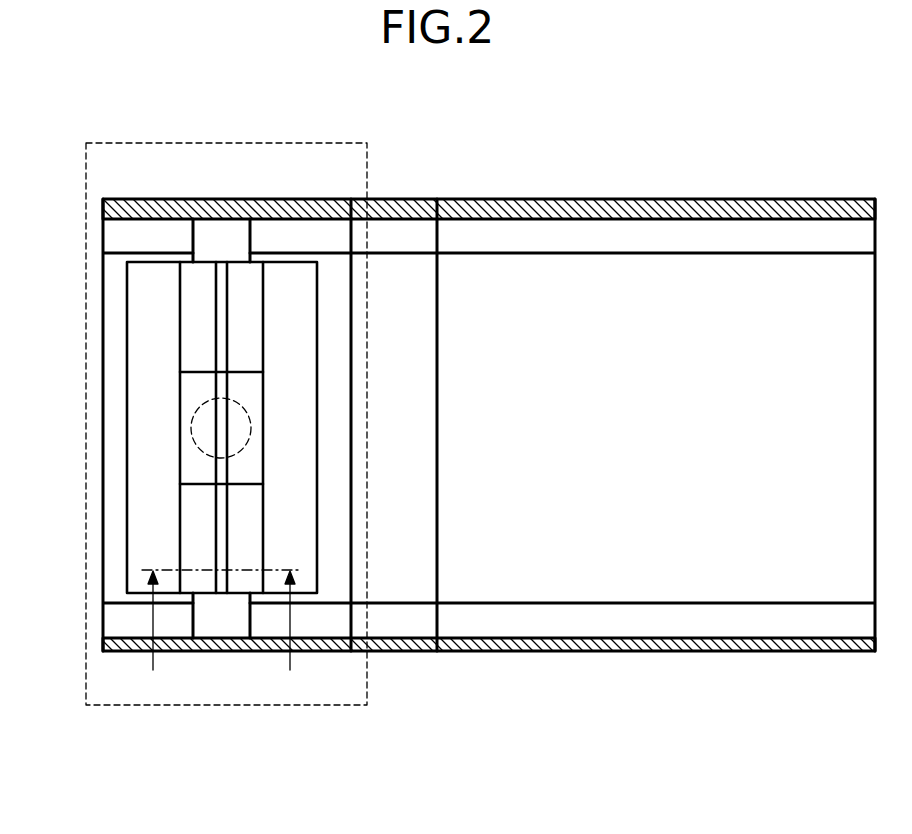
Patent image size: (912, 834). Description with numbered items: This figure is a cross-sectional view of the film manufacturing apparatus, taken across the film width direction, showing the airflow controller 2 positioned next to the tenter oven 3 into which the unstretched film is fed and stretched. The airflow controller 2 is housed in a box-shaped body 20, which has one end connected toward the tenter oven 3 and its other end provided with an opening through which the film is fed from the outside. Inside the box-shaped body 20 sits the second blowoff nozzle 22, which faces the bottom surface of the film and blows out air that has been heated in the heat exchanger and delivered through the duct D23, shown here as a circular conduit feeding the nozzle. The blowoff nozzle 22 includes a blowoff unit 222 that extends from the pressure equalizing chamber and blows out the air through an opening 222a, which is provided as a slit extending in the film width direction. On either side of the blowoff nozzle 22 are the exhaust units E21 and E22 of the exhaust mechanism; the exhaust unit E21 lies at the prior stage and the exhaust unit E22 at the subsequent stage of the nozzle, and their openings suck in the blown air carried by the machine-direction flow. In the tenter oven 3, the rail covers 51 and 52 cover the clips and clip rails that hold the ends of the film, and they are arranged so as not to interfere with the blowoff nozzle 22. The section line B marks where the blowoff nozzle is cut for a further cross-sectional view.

The airflow controller 2 is at (224, 143).
The tenter oven 3 is at (652, 198).
The rail cover 51 is at (781, 214).
The rail cover 52 is at (782, 652).
The box-shaped body 20 is at (222, 652).
The exhaust unit E21 is at (127, 316).
The exhaust unit E22 is at (317, 317).
The second blowoff nozzle 22 is at (270, 539).
The blowoff unit 222 is at (250, 505).
The opening 222a is at (210, 538).
The duct D23 is at (190, 428).
The section line B- B is at (221, 634).